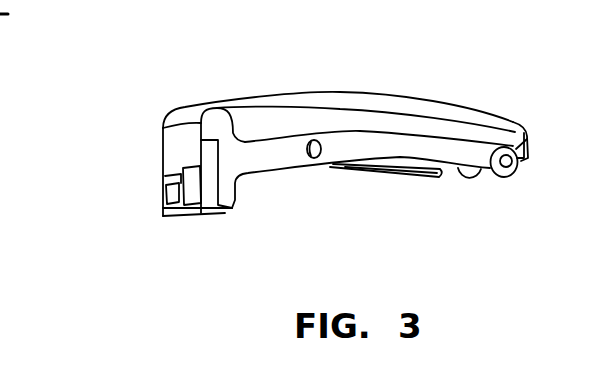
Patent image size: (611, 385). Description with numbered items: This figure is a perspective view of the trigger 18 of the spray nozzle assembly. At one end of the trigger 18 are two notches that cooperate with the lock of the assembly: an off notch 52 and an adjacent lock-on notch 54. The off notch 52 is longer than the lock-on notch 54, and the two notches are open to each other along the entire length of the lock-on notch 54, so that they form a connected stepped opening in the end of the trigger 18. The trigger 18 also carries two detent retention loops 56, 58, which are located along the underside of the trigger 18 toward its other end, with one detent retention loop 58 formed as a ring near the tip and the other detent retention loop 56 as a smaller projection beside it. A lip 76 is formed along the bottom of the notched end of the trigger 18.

The trigger 18 is at (393, 96).
The off notch 52 is at (193, 185).
The lock-on notch 54 is at (172, 174).
The detent retention loop 56 is at (470, 182).
The detent retention loop 58 is at (518, 175).
The lip 76 is at (193, 217).